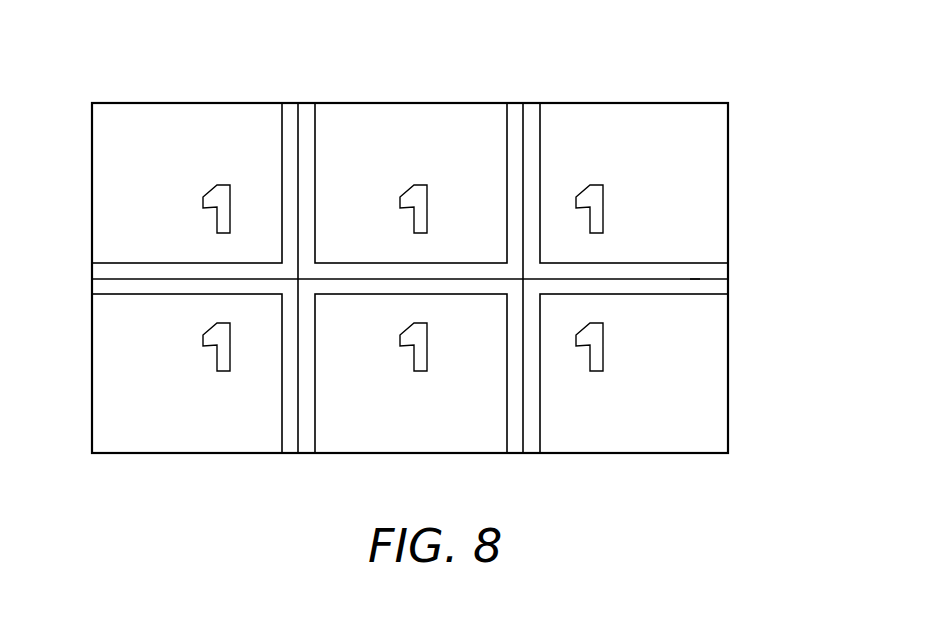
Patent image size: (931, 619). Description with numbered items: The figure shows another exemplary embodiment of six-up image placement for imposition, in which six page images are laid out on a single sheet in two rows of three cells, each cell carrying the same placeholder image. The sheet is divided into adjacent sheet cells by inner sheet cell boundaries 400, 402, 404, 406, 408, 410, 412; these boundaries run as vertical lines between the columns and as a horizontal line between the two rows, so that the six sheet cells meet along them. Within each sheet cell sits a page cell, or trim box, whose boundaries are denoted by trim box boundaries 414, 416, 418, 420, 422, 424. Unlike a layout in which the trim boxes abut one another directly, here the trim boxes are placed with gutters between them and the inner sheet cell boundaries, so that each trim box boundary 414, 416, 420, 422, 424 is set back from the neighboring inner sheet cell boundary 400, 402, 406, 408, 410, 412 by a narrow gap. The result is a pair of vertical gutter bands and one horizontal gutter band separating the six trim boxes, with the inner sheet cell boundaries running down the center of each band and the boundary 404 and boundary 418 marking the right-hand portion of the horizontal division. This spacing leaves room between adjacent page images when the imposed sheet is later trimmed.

The inner sheet cell boundary 400 is at (298, 153).
The inner sheet cell boundary 402 is at (523, 150).
The inner sheet cell boundary 404 is at (667, 279).
The inner sheet cell boundary 406 is at (523, 392).
The inner sheet cell boundary 408 is at (350, 281).
The inner sheet cell boundary 410 is at (298, 368).
The inner sheet cell boundary 412 is at (142, 278).
The trim box boundary 414 is at (283, 122).
The trim box boundary 416 is at (313, 190).
The trim box boundary 418 is at (700, 280).
The trim box boundary 420 is at (630, 295).
The trim box boundary 422 is at (315, 407).
The trim box boundary 424 is at (130, 295).